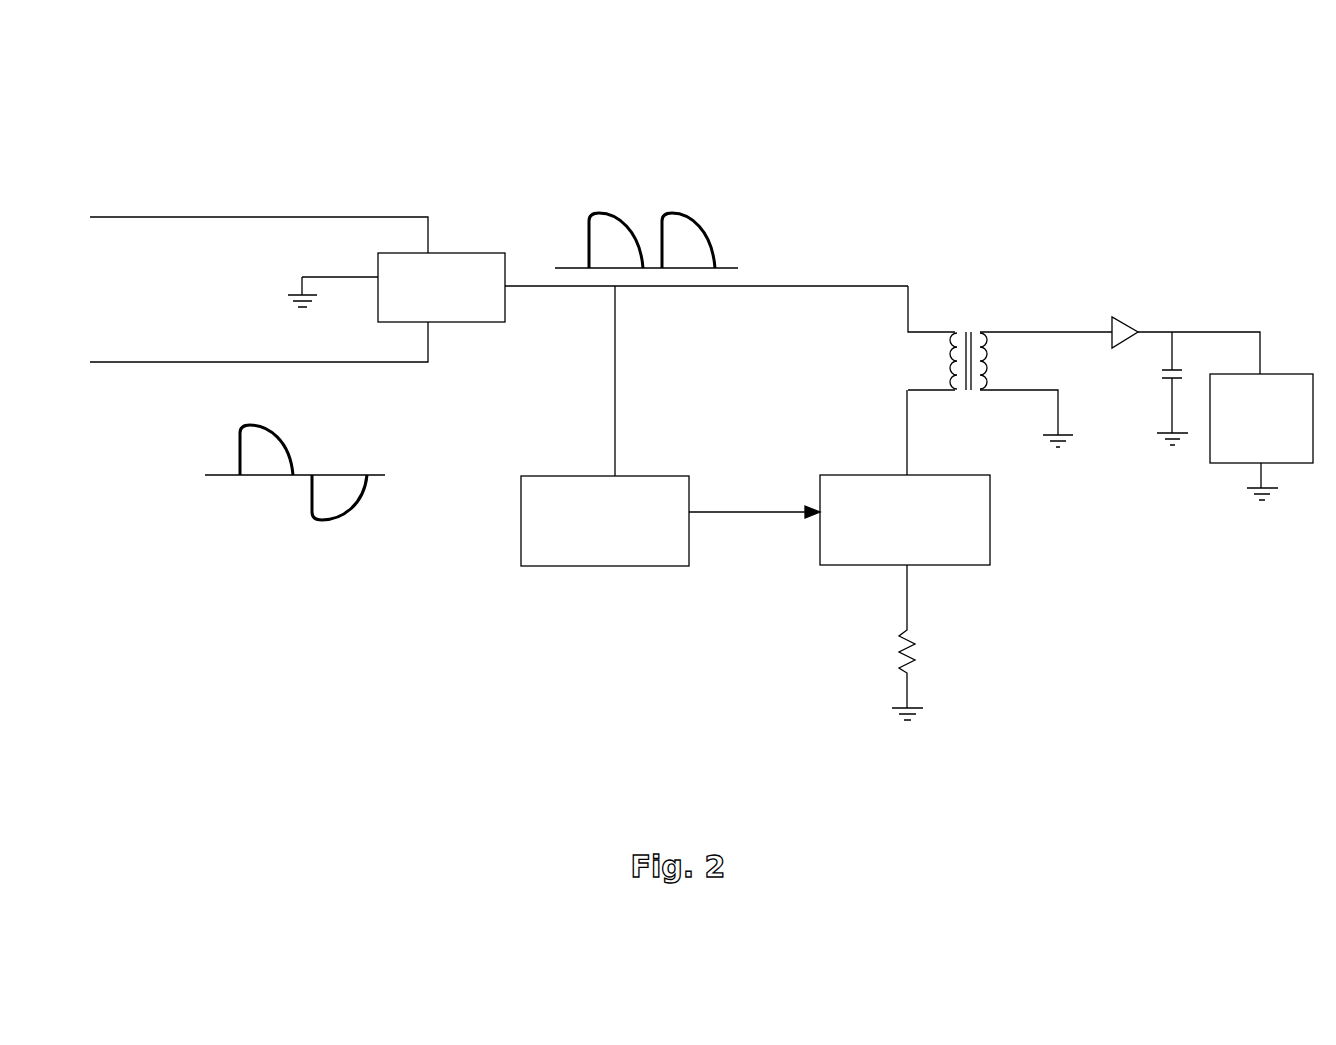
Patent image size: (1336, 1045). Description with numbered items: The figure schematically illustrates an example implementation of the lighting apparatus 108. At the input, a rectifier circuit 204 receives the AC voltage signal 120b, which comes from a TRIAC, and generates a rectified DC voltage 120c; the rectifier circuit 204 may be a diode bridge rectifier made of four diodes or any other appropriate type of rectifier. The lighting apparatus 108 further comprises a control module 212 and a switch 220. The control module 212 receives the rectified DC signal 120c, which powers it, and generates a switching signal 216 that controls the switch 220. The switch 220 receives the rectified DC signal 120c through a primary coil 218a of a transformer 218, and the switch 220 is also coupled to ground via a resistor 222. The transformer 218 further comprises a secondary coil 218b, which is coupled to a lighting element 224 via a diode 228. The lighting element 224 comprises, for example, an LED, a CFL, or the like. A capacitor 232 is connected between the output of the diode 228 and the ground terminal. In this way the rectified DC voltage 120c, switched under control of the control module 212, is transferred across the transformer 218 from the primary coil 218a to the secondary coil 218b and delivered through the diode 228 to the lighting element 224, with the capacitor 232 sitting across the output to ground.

The lighting apparatus 108 is at (1108, 166).
The AC voltage signal 120b is at (386, 454).
The rectified DC voltage 120c is at (724, 201).
The rectifier circuit 204 is at (441, 287).
The control module 212 is at (605, 521).
The switching signal 216 is at (754, 536).
The transformer 218 is at (978, 365).
The primary coil 218a is at (900, 362).
The secondary coil 218b is at (1046, 389).
The switch 220 is at (905, 477).
The resistor 222 is at (952, 642).
The lighting element 224 is at (1261, 437).
The diode 228 is at (1169, 334).
The capacitor 232 is at (1160, 374).